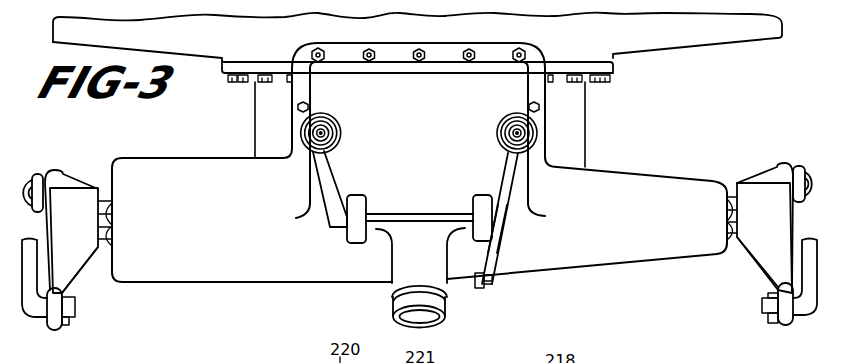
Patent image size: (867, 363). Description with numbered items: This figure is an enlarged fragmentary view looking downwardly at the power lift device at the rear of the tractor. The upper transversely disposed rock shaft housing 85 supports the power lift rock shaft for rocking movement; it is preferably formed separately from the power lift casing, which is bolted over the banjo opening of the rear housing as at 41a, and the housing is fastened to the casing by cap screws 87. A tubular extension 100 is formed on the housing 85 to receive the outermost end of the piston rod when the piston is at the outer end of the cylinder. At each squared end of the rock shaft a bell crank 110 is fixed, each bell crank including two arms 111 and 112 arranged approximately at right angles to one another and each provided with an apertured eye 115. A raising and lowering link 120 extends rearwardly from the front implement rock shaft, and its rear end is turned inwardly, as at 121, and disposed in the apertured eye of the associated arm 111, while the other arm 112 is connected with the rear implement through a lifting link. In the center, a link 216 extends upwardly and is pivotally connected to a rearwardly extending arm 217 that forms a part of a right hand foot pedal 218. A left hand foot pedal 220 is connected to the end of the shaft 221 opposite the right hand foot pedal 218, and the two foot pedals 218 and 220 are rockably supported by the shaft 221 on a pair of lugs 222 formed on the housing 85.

The bolting point 41a is at (257, 87).
The rock shaft housing 85 is at (347, 283).
The cap screws 87 is at (369, 62).
The tubular extension 100 is at (432, 273).
The bell crank 110 is at (82, 203).
The bell crank arm 111 is at (68, 278).
The bell crank arm 112 is at (58, 185).
The apertured eye 115 is at (52, 323).
The raising and lowering link 120 is at (27, 280).
The inturned end 121 is at (72, 312).
The link 216 is at (493, 280).
The rearwardly extending arm 217 is at (493, 253).
The right hand foot pedal 218 is at (508, 170).
The left hand foot pedal 220 is at (330, 168).
The shaft 221 is at (435, 220).
The lugs 222 is at (377, 183).